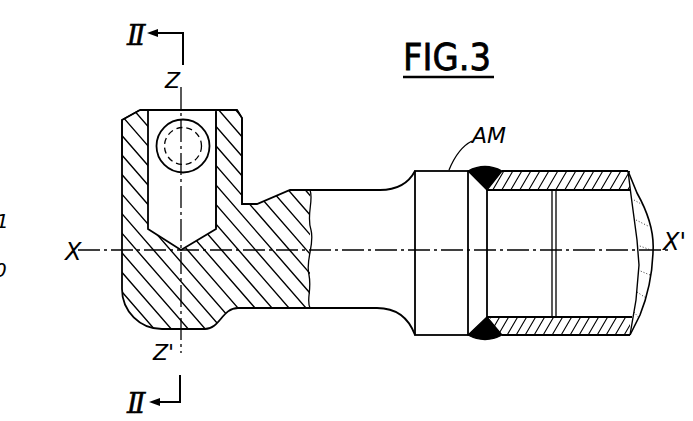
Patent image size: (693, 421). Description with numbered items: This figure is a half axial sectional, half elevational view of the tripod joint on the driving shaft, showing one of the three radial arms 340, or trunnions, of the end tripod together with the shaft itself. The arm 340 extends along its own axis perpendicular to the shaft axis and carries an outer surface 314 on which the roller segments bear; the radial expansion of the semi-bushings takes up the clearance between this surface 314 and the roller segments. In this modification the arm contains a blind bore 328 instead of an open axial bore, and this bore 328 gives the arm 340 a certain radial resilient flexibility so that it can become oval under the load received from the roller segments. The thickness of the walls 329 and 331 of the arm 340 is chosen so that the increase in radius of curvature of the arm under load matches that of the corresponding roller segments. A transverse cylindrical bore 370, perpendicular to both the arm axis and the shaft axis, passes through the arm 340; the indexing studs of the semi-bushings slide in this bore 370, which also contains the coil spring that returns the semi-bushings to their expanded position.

The surface 314 is at (252, 122).
The blind bore 328 is at (153, 120).
The wall 329 is at (230, 148).
The wall 331 is at (132, 130).
The radial arm 340 is at (118, 205).
The cylindrical bore 370 is at (200, 134).